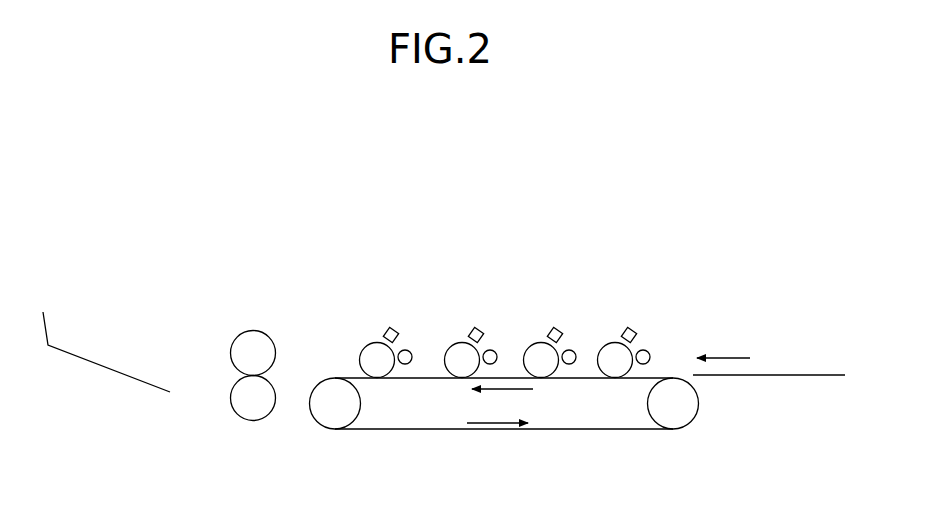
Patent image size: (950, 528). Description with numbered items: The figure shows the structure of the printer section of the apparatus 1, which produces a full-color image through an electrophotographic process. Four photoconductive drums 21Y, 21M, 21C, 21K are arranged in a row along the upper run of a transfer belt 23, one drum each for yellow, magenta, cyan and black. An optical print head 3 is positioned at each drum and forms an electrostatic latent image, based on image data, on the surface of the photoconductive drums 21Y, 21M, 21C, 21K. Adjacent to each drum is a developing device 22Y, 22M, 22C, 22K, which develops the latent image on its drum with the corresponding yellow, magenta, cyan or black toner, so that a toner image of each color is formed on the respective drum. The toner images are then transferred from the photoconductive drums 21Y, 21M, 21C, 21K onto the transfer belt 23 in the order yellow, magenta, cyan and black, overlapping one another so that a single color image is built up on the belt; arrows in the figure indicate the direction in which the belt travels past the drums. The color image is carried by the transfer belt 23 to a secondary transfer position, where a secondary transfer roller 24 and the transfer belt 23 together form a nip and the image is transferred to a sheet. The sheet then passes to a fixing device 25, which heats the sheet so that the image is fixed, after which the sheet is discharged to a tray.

The image forming apparatus 1 is at (592, 218).
The optical print head 3 is at (394, 328).
The photoconductive drum 21Y is at (372, 342).
The photoconductive drum 21M is at (457, 342).
The photoconductive drum 21C is at (536, 342).
The photoconductive drum 21K is at (610, 342).
The developing device 22Y is at (409, 351).
The developing device 22M is at (494, 351).
The developing device 22C is at (573, 351).
The developing device 22K is at (647, 351).
The transfer belt 23 is at (555, 430).
The secondary transfer roller 24 is at (252, 331).
The fixing device 25 is at (82, 360).